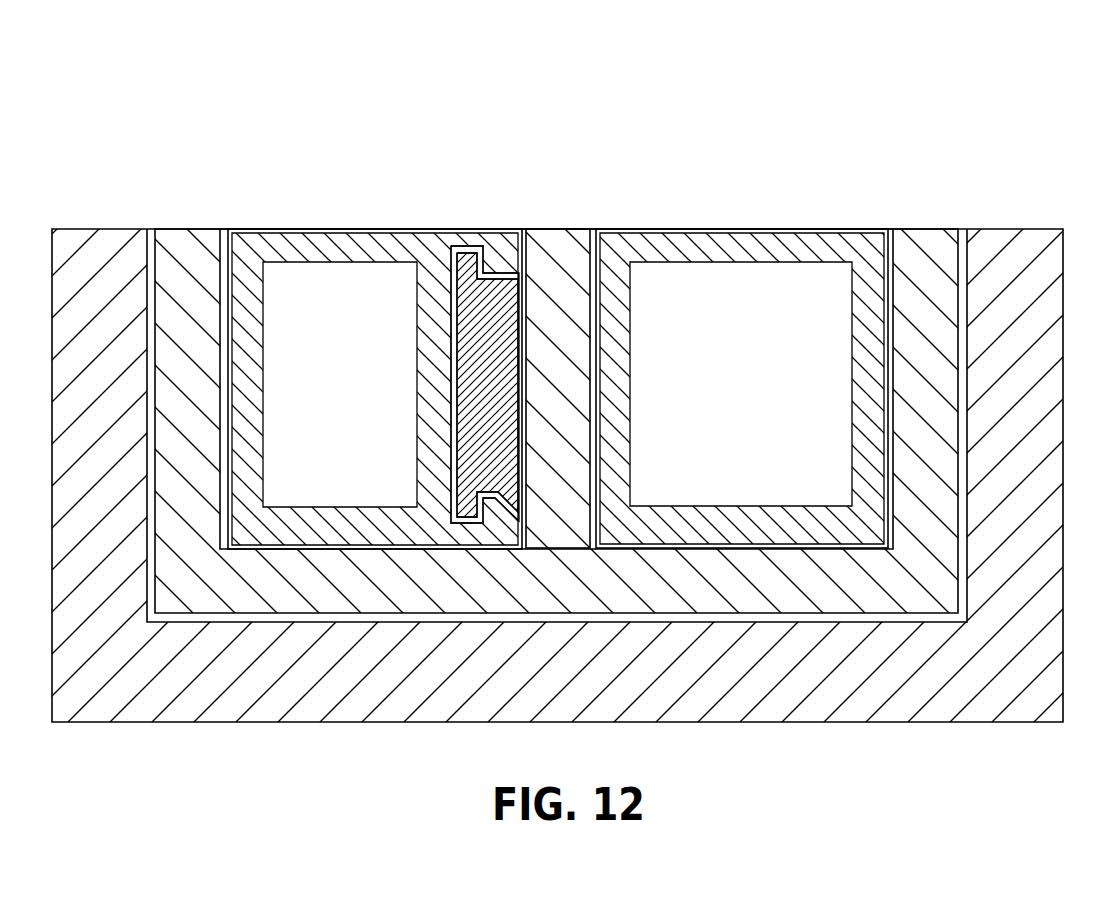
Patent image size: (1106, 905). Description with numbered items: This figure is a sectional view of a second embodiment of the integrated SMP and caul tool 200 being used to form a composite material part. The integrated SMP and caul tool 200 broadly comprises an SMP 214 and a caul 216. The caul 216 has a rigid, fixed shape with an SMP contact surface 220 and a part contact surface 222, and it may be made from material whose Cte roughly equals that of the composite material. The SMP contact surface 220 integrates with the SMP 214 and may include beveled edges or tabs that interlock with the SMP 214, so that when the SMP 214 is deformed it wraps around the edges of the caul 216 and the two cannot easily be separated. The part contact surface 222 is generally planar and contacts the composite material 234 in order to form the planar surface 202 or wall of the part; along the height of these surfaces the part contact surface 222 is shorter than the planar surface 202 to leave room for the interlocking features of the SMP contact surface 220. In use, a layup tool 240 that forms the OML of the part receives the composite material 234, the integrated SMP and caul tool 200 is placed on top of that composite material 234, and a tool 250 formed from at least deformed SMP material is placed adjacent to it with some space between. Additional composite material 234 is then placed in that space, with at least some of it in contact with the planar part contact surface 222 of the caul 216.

The integrated SMP and caul tool 200 is at (367, 101).
The planar surface 202 is at (527, 278).
The SMP 214 is at (289, 234).
The caul 216 is at (451, 347).
The SMP contact surface 220 is at (459, 240).
The part contact surface 222 is at (503, 290).
The composite material 234 is at (190, 234).
The layup tool 240 is at (92, 234).
The tool formed from deformed SMP material 250 is at (748, 234).